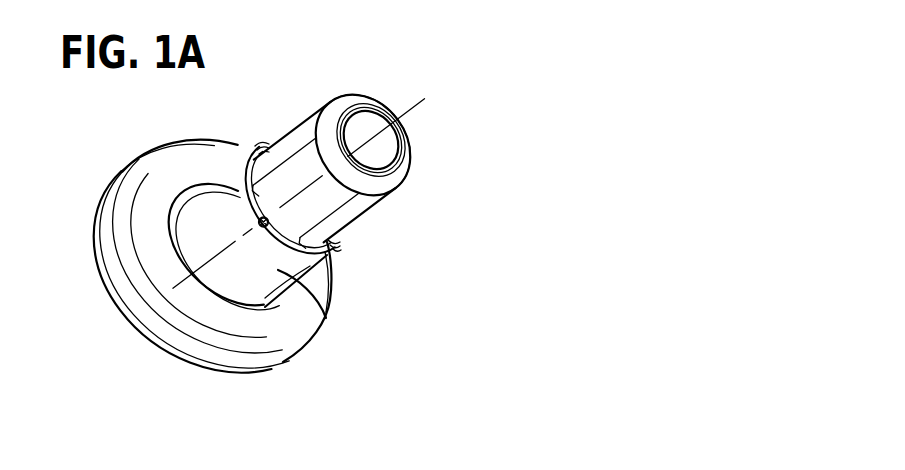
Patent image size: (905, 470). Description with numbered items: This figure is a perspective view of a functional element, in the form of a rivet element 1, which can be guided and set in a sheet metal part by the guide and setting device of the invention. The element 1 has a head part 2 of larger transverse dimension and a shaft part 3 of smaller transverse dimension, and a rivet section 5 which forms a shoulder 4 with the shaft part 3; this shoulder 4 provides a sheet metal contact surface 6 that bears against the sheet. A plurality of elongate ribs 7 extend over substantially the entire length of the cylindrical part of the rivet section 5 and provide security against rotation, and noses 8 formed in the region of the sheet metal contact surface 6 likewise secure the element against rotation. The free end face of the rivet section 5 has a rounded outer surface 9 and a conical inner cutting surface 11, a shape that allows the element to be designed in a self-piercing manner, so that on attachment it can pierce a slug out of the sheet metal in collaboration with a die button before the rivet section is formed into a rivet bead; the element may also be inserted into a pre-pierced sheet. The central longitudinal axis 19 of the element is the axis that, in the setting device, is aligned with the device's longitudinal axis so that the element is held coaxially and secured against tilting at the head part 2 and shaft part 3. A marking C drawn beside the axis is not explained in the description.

The rivet element 1 is at (430, 228).
The head part 2 is at (266, 364).
The shaft part 3 is at (322, 300).
The shoulder 4 is at (334, 250).
The rivet section 5 is at (297, 133).
The sheet metal contact surface 6 is at (243, 184).
The elongate ribs 7 is at (258, 149).
The noses 8 is at (253, 226).
The rounded outer surface 9 is at (405, 167).
The conical inner cutting surface 11 is at (405, 142).
The central longitudinal axis 19 is at (412, 108).
The central axis C is at (460, 76).